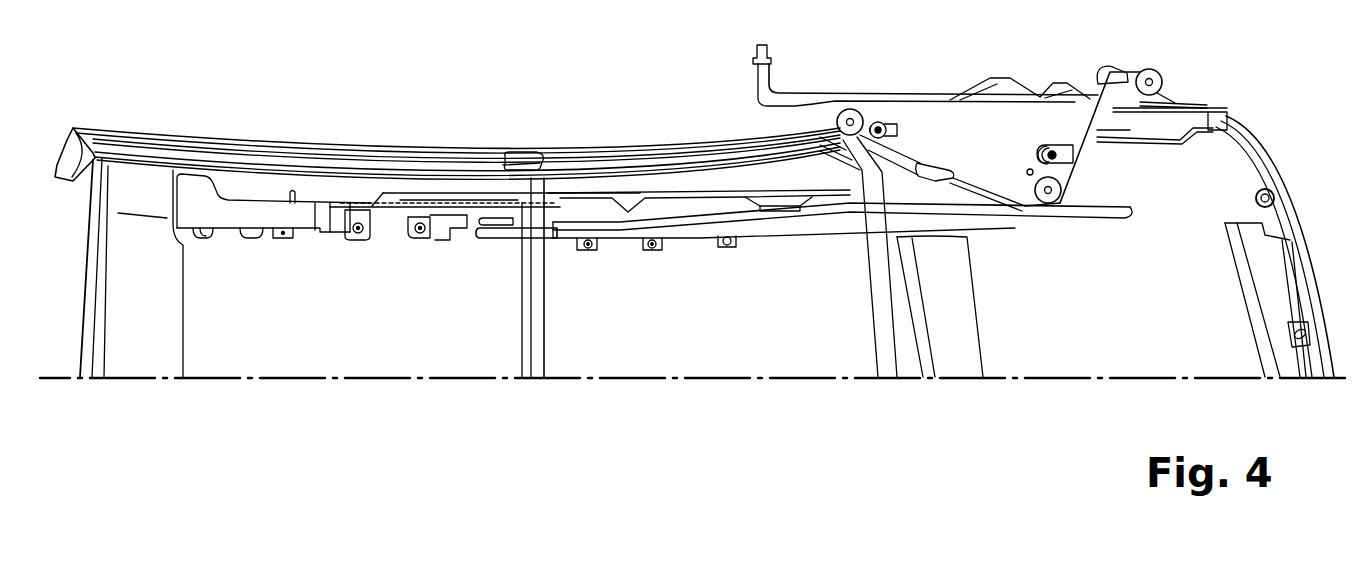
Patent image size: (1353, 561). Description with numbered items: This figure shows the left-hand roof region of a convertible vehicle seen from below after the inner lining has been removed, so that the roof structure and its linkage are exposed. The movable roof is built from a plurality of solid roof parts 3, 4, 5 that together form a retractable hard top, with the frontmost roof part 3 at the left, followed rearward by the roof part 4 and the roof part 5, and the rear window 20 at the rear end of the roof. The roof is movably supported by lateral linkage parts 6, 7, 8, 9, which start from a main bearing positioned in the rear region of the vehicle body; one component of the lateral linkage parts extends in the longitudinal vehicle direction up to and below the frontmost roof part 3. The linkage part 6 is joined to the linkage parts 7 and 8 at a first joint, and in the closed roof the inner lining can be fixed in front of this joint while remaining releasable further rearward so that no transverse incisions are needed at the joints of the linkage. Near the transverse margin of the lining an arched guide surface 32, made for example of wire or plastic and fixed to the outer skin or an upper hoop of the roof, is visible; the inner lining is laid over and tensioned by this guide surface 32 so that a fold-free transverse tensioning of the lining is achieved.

The frontmost roof part 3 is at (396, 323).
The roof part 4 is at (732, 323).
The roof part 5 is at (950, 330).
The linkage part 6 is at (367, 208).
The linkage part 7 is at (588, 192).
The linkage part 8 is at (680, 197).
The linkage part 9 is at (508, 231).
The rear window 20 is at (1128, 323).
The arched guide surface 32 is at (267, 212).